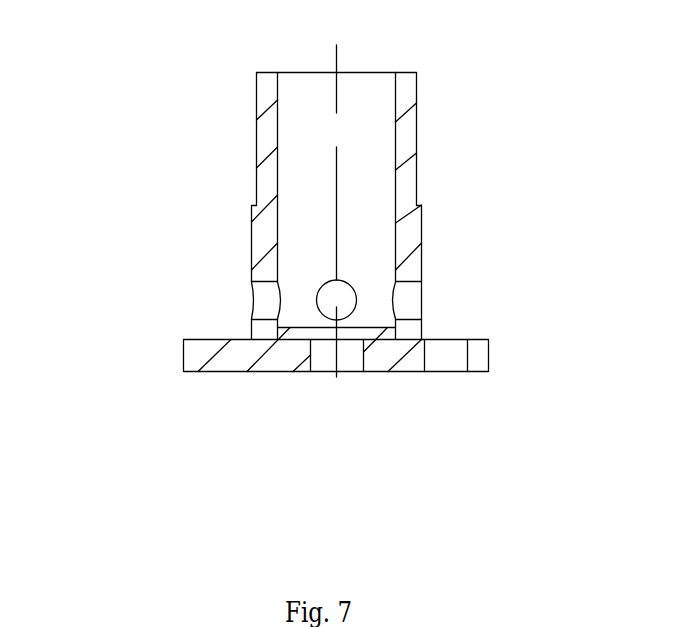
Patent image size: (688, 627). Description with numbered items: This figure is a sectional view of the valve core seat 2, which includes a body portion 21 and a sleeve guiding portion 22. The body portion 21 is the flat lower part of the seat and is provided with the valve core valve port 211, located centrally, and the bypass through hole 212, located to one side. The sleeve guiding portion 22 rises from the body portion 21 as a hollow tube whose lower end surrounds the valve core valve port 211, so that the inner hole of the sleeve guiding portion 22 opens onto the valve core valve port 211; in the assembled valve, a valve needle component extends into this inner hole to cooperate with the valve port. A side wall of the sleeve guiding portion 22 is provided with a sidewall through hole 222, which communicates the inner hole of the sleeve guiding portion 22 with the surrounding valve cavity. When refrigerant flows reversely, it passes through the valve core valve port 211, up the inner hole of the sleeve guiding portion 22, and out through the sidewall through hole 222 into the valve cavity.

The valve core seat 2 is at (316, 259).
The body portion 21 is at (308, 373).
The sleeve guiding portion 22 is at (333, 206).
The valve core valve port 211 is at (418, 472).
The bypass through hole 212 is at (532, 472).
The sidewall through hole 222 is at (417, 274).